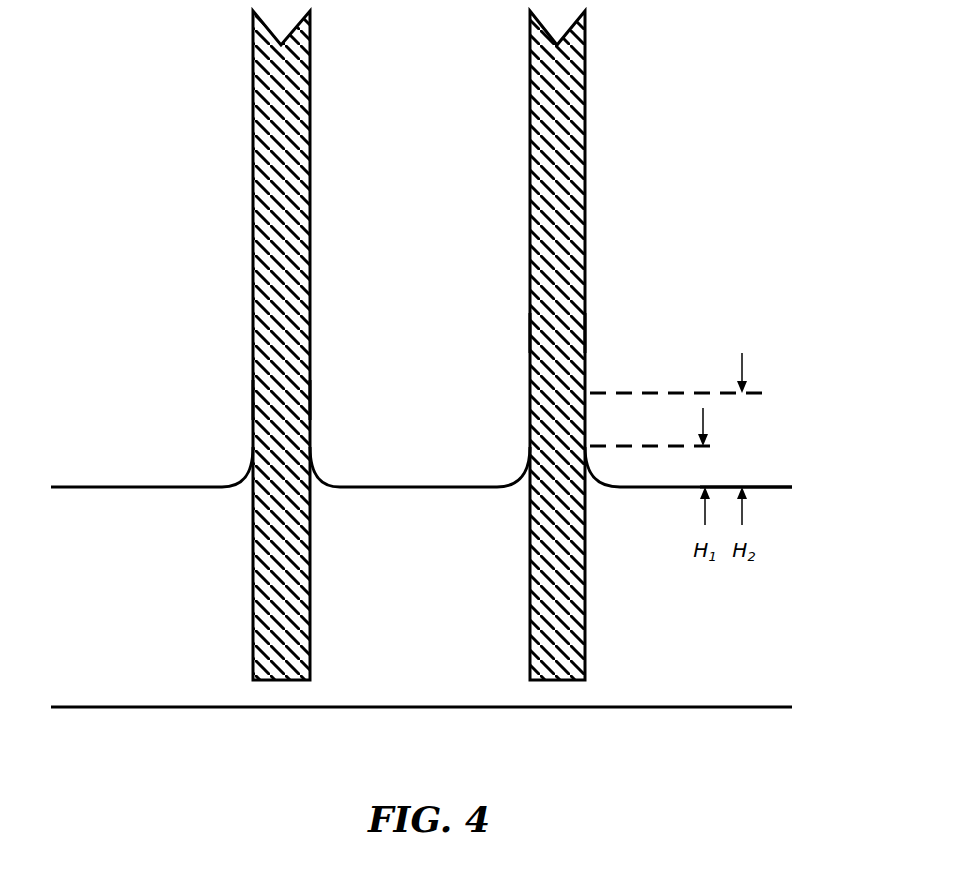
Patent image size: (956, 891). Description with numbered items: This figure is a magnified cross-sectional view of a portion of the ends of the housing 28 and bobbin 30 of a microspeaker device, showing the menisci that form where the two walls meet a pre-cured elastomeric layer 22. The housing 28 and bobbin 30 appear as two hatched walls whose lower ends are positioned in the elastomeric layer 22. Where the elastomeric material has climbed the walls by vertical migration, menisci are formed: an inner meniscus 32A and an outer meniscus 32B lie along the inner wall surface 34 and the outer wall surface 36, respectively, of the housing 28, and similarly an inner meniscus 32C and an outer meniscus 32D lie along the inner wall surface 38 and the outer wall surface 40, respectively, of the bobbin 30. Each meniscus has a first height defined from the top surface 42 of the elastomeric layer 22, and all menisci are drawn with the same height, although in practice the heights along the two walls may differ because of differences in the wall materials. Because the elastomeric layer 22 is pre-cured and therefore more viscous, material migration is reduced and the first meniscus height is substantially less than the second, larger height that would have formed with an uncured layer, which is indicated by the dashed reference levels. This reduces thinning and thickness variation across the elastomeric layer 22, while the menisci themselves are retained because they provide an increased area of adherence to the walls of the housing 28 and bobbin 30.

The elastomeric layer 22 is at (410, 611).
The housing 28 is at (254, 218).
The bobbin 30 is at (531, 217).
The inner meniscus 32A is at (338, 470).
The outer meniscus 32B is at (228, 470).
The inner meniscus 32C is at (594, 472).
The outer meniscus 32D is at (508, 470).
The inner wall surface 34 is at (316, 400).
The outer wall surface 36 is at (248, 400).
The inner wall surface 38 is at (592, 333).
The outer wall surface 40 is at (524, 333).
The top surface 42 is at (759, 472).